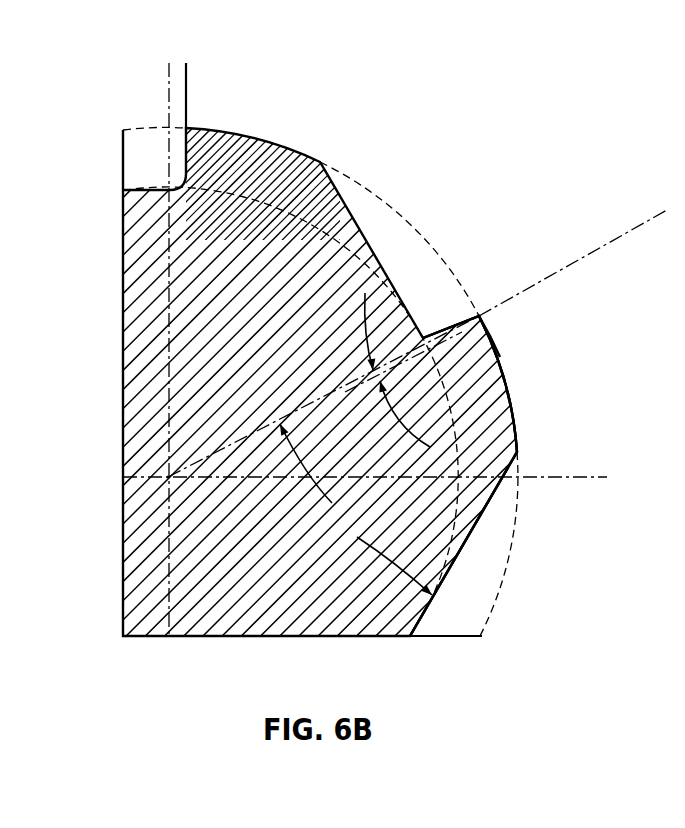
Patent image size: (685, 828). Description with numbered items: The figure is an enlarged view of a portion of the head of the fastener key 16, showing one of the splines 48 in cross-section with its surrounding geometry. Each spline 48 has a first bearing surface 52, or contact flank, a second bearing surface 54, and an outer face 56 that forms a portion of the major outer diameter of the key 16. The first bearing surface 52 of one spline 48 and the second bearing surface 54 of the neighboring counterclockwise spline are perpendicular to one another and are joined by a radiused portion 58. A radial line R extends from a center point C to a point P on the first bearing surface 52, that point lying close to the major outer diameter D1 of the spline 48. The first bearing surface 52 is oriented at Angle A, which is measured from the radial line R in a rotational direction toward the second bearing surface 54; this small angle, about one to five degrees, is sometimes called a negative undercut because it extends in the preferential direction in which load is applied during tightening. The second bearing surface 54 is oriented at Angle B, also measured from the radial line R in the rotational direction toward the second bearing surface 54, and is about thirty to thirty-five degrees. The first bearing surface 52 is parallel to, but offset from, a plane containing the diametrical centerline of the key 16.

The key 16 is at (407, 130).
The spline 48 is at (492, 397).
The first bearing surface 52 is at (457, 330).
The second bearing surface 54 is at (469, 537).
The outer face 56 is at (500, 357).
The radiused portion 58 is at (425, 335).
The point P is at (482, 318).
The center point C is at (157, 493).
The radial line R is at (233, 442).
The Angle A is at (368, 328).
The Angle B is at (356, 509).
The major outer diameter D1 is at (569, 450).